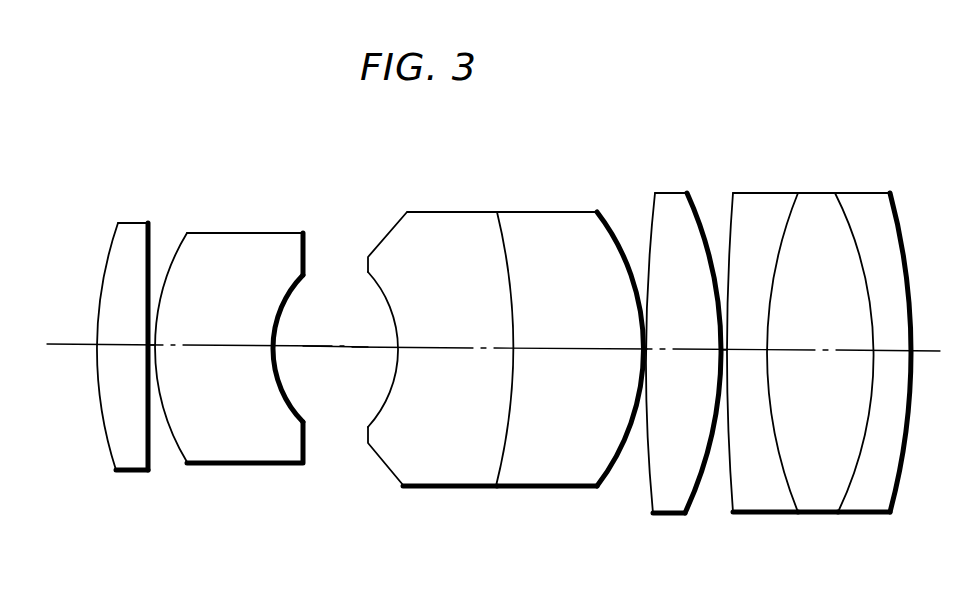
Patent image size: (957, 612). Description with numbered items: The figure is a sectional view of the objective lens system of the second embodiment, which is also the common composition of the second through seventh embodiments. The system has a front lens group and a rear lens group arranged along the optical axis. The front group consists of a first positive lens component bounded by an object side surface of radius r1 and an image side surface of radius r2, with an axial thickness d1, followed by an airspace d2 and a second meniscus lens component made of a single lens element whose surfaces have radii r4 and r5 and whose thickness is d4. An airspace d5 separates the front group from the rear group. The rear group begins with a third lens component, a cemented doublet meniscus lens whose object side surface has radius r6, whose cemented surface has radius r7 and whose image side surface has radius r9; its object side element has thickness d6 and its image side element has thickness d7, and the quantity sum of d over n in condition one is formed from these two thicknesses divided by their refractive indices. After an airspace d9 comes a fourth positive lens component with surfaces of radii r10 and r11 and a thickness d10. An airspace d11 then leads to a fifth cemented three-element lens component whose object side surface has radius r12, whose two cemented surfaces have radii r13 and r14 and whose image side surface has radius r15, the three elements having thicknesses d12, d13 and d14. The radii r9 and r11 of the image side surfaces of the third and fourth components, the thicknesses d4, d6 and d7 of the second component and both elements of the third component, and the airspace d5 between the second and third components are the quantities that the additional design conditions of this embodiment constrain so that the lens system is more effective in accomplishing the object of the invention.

The thickness of first lens component d1 is at (116, 345).
The airspace between first and second lens components d2 is at (150, 345).
The thickness of second lens component d4 is at (237, 345).
The airspace between second and third lens components d5 is at (320, 347).
The thickness of object side element of third lens component d6 is at (455, 347).
The thickness of image side element of third lens component d7 is at (572, 347).
The airspace between third and fourth lens components d9 is at (645, 347).
The thickness of fourth lens component d10 is at (653, 350).
The airspace between fourth and fifth lens components d11 is at (722, 350).
The thickness of first element of fifth lens component d12 is at (750, 350).
The thickness of second element of fifth lens component d13 is at (812, 350).
The thickness of third element of fifth lens component d14 is at (895, 350).
The radius of curvature of object side surface of first lens component r1 is at (110, 447).
The radius of curvature of image side surface of first lens component r2 is at (147, 446).
The radius of curvature of object side surface of second lens component r4 is at (177, 448).
The radius of curvature of image side surface of second lens component r5 is at (298, 413).
The radius of curvature of object side surface of third lens component r6 is at (365, 418).
The radius of curvature of cemented surface of third lens component r7 is at (493, 475).
The radius of curvature of image side surface of third lens component r9 is at (605, 478).
The radius of curvature of object side surface of fourth lens component r10 is at (650, 482).
The radius of curvature of image side surface of fourth lens component r11 is at (698, 485).
The radius of curvature of object side surface of fifth lens component r12 is at (732, 485).
The radius of curvature of first cemented surface of fifth lens component r13 is at (797, 493).
The radius of curvature of second cemented surface of fifth lens component r14 is at (842, 492).
The radius of curvature of image side surface of fifth lens component r15 is at (897, 487).